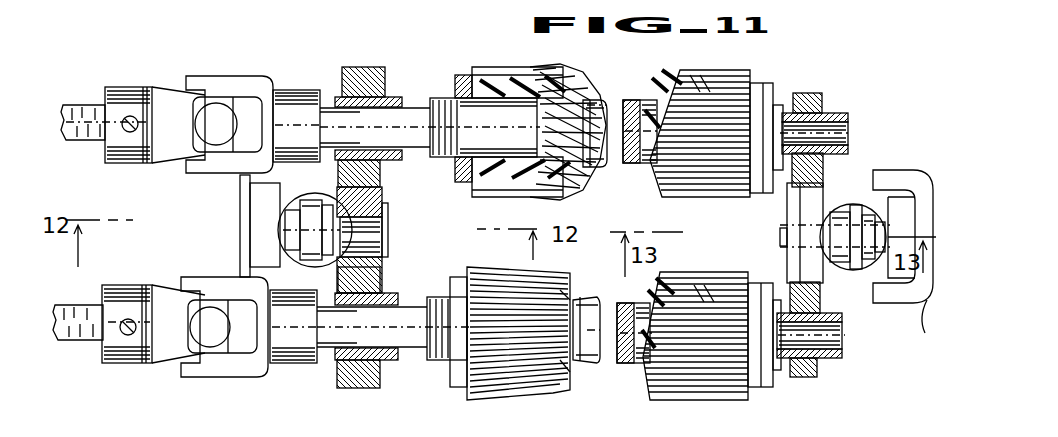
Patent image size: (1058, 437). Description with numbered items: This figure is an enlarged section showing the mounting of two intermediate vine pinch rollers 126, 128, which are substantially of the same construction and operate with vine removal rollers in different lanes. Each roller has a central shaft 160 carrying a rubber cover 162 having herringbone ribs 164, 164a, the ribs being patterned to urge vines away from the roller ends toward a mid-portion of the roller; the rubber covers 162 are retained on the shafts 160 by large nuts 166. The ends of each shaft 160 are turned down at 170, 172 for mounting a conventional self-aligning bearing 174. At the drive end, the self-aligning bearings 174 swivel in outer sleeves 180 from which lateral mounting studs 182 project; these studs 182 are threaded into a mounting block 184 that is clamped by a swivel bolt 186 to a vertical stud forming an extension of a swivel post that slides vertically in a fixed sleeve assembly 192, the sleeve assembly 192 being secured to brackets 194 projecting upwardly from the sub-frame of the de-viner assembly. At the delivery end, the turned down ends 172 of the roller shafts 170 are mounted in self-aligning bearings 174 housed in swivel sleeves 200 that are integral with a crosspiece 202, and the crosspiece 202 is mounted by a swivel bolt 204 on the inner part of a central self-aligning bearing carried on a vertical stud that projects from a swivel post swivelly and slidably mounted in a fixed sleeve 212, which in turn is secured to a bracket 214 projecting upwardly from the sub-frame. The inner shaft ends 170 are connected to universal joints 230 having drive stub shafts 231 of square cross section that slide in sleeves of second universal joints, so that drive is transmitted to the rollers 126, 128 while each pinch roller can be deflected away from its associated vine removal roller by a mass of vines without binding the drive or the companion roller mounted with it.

The vine pinch roller 126 is at (750, 67).
The vine pinch roller 128 is at (747, 400).
The central shaft 160 is at (632, 110).
The rubber cover 162 is at (578, 188).
The herringbone rib 164 is at (560, 97).
The herringbone rib 164a is at (715, 82).
The large nut 166 is at (760, 193).
The turned down shaft end 170 is at (413, 112).
The turned down shaft end 172 is at (848, 125).
The self-aligning bearing 174 is at (342, 88).
The outer sleeve 180 is at (350, 66).
The lateral mounting stud 182 is at (383, 253).
The mounting block 184 is at (383, 193).
The swivel bolt 186 is at (290, 215).
The fixed sleeve assembly 192 is at (367, 170).
The bracket 194 is at (245, 193).
The swivel sleeve 200 is at (803, 97).
The crosspiece 202 is at (830, 187).
The swivel bolt 204 is at (783, 233).
The fixed sleeve 212 is at (870, 277).
The bracket 214 is at (927, 300).
The universal joint 230 is at (168, 93).
The drive stub shaft 231 is at (77, 118).